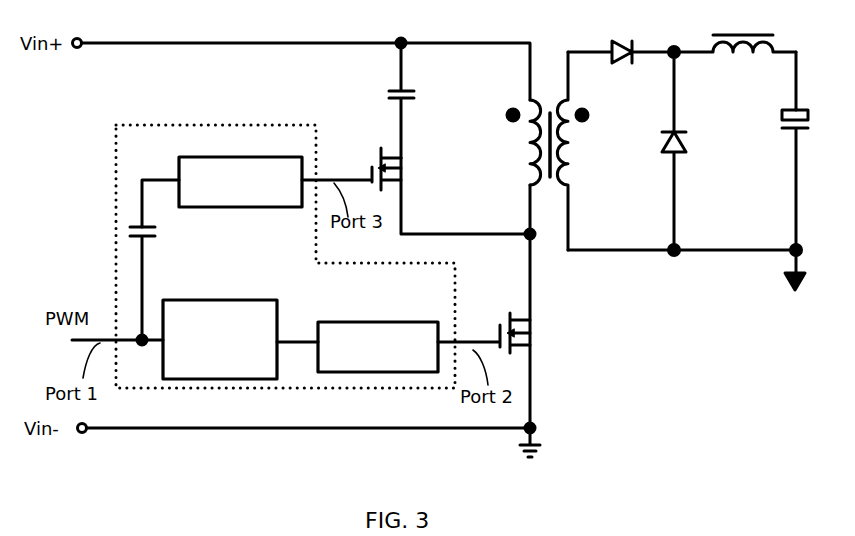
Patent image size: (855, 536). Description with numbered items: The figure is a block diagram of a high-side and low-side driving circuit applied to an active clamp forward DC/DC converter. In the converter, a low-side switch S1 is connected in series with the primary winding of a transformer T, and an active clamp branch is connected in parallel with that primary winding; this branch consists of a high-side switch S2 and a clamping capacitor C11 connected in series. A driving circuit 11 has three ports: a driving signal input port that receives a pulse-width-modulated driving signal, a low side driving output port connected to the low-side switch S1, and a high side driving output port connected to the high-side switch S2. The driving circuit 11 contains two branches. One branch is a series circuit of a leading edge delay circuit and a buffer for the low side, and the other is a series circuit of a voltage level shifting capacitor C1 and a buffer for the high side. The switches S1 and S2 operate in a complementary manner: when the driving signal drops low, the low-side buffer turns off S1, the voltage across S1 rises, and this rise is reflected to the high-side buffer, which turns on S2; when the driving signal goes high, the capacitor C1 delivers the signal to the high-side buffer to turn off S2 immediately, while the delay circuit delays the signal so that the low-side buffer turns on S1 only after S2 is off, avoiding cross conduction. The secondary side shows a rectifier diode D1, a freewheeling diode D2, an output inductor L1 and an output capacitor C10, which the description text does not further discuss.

The driving circuit 11 is at (258, 256).
The voltage level shifting capacitor C1 is at (158, 283).
The output capacitor C10 is at (771, 151).
The clamping capacitor C11 is at (379, 100).
The rectifier diode D1 is at (621, 35).
The freewheeling diode D2 is at (653, 151).
The output inductor L1 is at (735, 30).
The low-side switch S1 is at (484, 333).
The high-side switch S2 is at (351, 169).
The transformer T is at (541, 151).